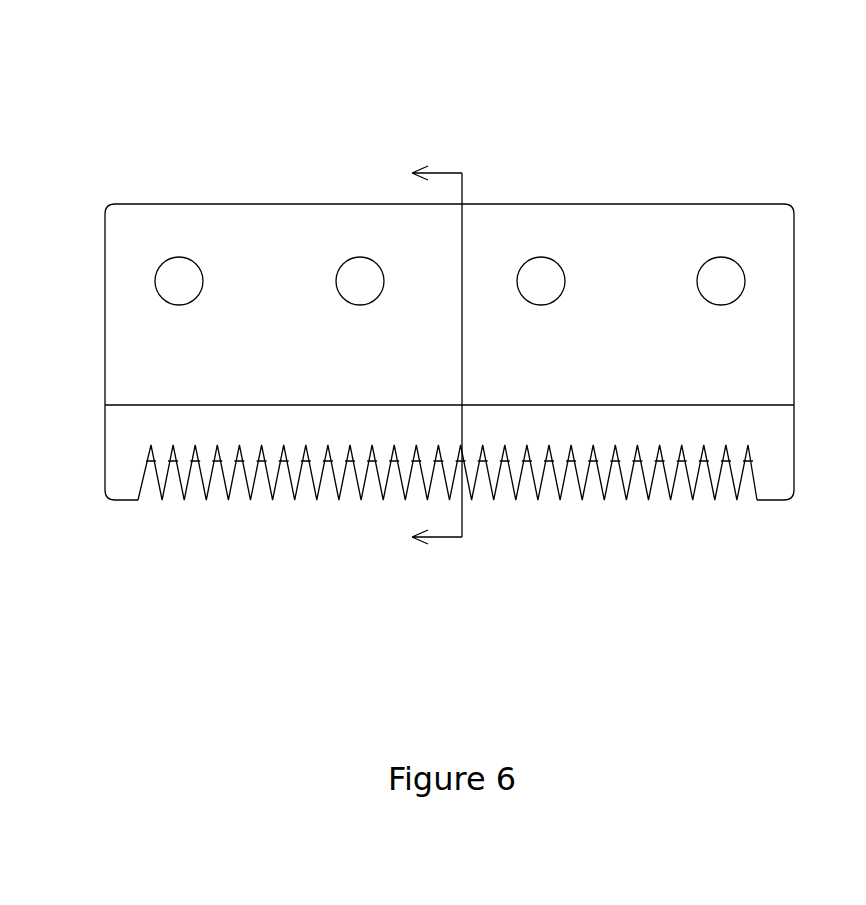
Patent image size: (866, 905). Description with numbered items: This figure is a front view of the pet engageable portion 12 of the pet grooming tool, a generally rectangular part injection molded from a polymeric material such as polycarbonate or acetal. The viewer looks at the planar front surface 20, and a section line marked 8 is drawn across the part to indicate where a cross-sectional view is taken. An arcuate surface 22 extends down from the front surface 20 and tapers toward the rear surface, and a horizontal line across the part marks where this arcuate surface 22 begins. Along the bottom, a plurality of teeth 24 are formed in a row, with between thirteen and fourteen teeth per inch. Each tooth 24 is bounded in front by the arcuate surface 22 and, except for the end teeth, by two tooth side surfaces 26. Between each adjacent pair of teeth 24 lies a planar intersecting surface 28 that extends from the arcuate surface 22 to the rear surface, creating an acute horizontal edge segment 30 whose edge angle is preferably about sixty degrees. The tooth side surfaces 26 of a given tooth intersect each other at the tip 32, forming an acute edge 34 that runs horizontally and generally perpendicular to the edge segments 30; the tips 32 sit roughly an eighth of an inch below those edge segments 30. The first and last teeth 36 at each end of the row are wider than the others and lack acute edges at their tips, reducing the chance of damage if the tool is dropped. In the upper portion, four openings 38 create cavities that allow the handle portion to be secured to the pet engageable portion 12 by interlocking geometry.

The section line 8- 8 is at (428, 357).
The pet engageable portion 12 is at (456, 359).
The front surface 20 is at (617, 262).
The arcuate surface 22 is at (718, 418).
The teeth 24 is at (447, 541).
The tooth side surfaces 26 is at (197, 490).
The intersecting surface 28 is at (617, 500).
The edge segment 30 is at (175, 470).
The tip 32 is at (447, 562).
The acute edge 34 is at (447, 562).
The first and last teeth 36 is at (120, 482).
The openings 38 is at (182, 257).